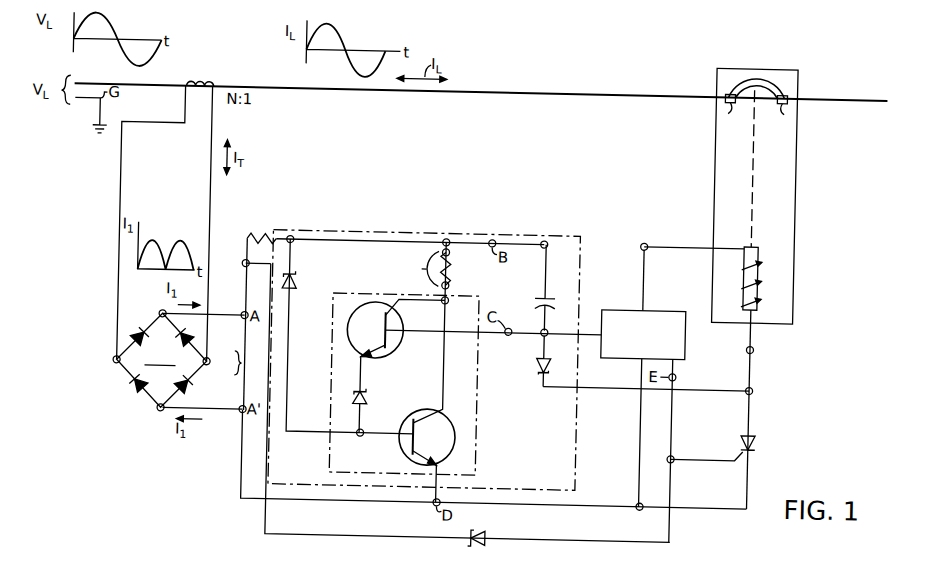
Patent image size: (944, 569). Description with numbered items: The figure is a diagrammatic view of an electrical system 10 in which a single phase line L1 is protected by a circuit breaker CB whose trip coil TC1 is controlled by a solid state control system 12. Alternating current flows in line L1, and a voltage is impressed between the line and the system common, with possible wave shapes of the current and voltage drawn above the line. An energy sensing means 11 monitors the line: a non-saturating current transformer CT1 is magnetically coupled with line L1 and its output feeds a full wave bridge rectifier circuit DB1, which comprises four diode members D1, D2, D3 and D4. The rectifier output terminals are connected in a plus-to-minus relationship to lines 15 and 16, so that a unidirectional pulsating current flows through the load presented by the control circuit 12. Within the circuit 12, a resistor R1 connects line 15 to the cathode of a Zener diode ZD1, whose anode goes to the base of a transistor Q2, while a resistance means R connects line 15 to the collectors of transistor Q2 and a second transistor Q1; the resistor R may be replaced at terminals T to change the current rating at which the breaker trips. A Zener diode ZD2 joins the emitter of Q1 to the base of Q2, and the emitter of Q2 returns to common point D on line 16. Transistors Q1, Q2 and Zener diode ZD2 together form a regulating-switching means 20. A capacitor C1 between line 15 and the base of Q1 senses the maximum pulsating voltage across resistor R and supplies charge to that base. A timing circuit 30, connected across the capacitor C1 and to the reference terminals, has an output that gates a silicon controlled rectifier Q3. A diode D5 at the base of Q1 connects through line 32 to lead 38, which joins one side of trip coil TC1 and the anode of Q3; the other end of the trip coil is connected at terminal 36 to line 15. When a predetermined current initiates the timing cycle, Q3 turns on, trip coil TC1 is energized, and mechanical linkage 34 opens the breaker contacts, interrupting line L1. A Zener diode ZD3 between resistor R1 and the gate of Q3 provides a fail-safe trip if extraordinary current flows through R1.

The electrical system 10 is at (548, 72).
The monitoring system or energy sensing means 11 is at (167, 375).
The solid state control system 12 is at (372, 233).
The positive line 15 is at (215, 318).
The negative line 16 is at (238, 420).
The regulating-switching means 20 is at (476, 295).
The timing circuit 30 is at (622, 306).
The line 32 is at (698, 385).
The plunger or mechanical linkage 34 is at (748, 190).
The terminal 36 is at (680, 242).
The electrical lead 38 is at (755, 344).
The non-saturating current transformer CT1 is at (197, 84).
The trip coil TC1 is at (765, 267).
The circuit breaker CB is at (794, 192).
The single phase line L1 is at (578, 92).
The resistor R1 is at (262, 236).
The resistor or resistance means R is at (450, 270).
The terminals T is at (423, 269).
The transistor Q1 is at (397, 307).
The transistor Q2 is at (447, 414).
The silicon controlled rectifier Q3 is at (756, 438).
The Zener diode ZD1 is at (297, 282).
The Zener diode ZD2 is at (370, 397).
The Zener diode ZD3 is at (486, 532).
The capacitor C1 is at (548, 292).
The diode D5 is at (538, 366).
The full wave bridge rectifier circuit DB1 is at (162, 360).
The diode member D1 is at (128, 337).
The diode member D2 is at (196, 344).
The diode member D3 is at (130, 393).
The diode member D4 is at (192, 387).